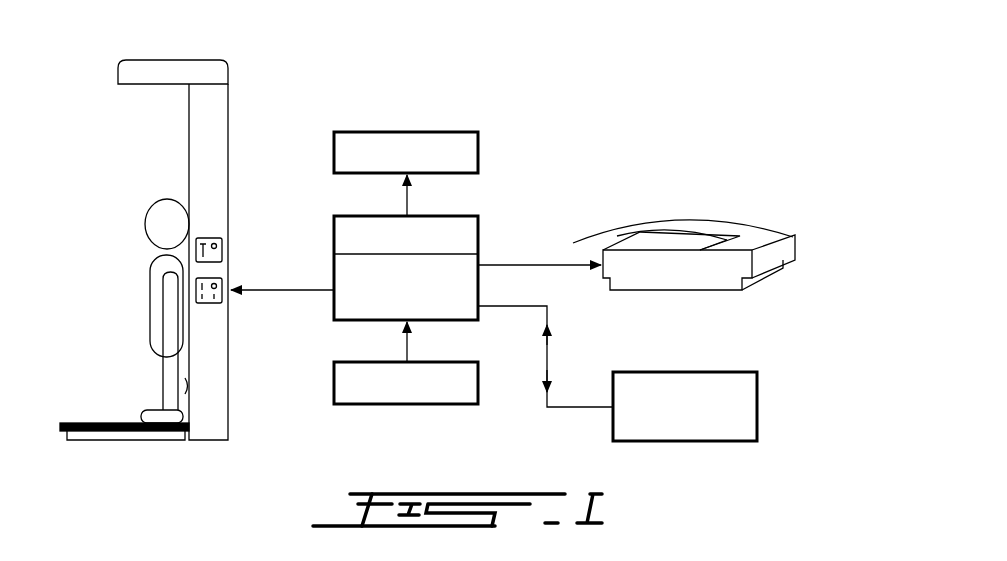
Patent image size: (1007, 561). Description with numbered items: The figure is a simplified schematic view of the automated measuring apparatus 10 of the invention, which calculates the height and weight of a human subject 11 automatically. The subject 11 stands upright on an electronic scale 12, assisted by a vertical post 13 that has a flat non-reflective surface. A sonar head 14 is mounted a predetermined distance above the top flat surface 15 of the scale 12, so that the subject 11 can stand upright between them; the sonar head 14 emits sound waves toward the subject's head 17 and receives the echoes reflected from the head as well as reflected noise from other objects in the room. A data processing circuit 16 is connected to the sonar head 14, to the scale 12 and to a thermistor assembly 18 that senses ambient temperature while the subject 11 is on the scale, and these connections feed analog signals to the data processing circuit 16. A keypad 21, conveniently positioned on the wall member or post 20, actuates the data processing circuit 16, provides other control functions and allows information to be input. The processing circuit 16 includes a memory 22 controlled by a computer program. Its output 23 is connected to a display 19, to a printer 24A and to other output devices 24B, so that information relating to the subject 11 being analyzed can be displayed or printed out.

The automated measuring apparatus 10 is at (98, 113).
The human subject 11 is at (148, 287).
The electronic scale 12 is at (121, 421).
The vertical post 13 is at (187, 382).
The sonar head 14 is at (167, 64).
The top flat surface 15 is at (82, 423).
The data processing circuit 16 is at (459, 274).
The subject's head 17 is at (155, 214).
The thermistor assembly 18 is at (223, 252).
The display 19 is at (427, 132).
The wall member or post 20 is at (210, 380).
The keypad 21 is at (456, 393).
The memory 22 is at (470, 222).
The output 23 is at (518, 266).
The printer 24A is at (720, 270).
The other output devices 24B is at (736, 441).